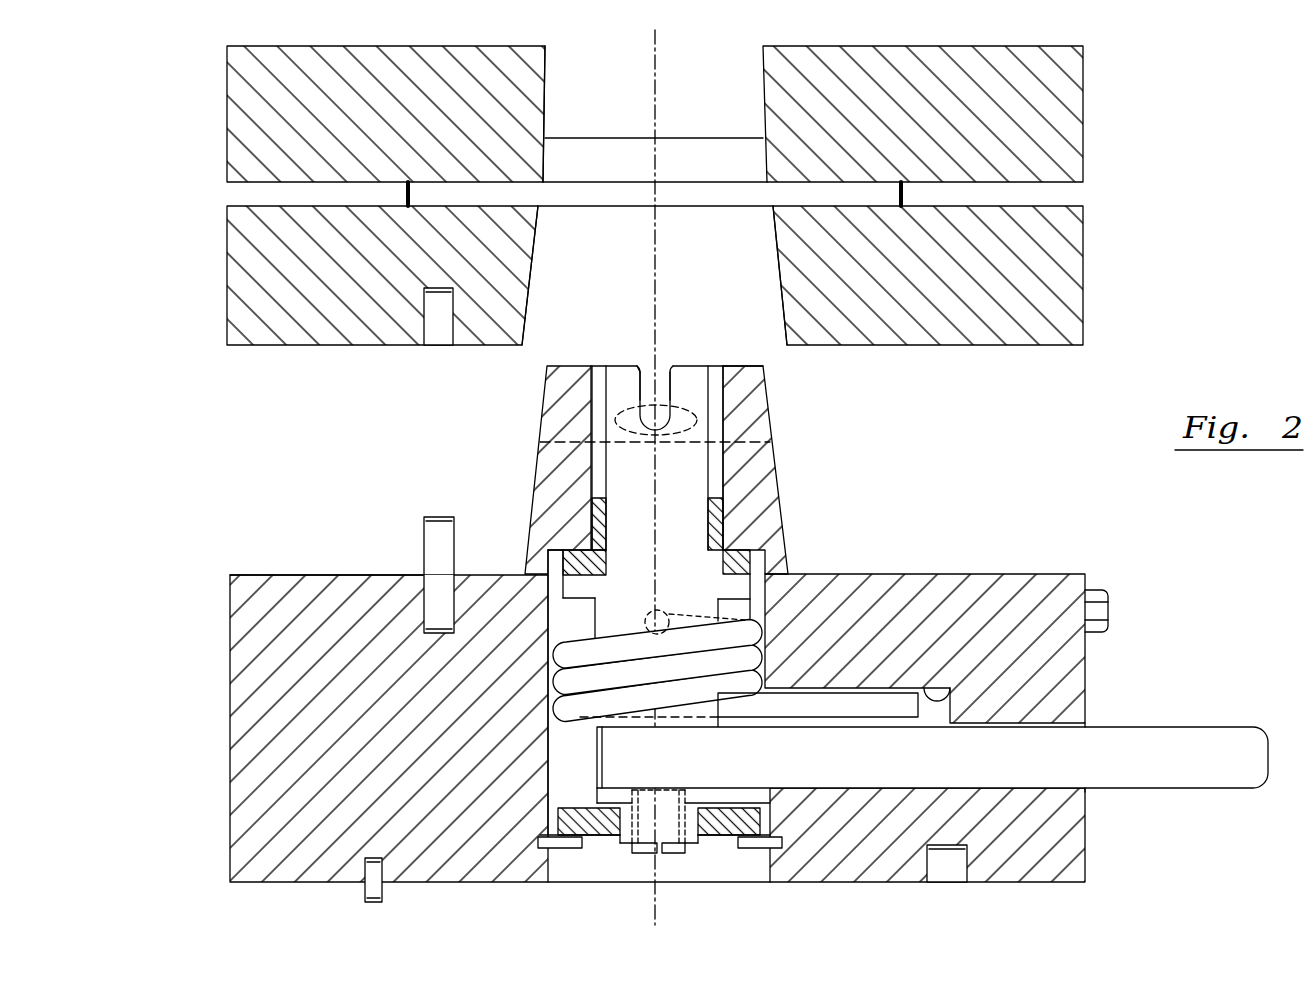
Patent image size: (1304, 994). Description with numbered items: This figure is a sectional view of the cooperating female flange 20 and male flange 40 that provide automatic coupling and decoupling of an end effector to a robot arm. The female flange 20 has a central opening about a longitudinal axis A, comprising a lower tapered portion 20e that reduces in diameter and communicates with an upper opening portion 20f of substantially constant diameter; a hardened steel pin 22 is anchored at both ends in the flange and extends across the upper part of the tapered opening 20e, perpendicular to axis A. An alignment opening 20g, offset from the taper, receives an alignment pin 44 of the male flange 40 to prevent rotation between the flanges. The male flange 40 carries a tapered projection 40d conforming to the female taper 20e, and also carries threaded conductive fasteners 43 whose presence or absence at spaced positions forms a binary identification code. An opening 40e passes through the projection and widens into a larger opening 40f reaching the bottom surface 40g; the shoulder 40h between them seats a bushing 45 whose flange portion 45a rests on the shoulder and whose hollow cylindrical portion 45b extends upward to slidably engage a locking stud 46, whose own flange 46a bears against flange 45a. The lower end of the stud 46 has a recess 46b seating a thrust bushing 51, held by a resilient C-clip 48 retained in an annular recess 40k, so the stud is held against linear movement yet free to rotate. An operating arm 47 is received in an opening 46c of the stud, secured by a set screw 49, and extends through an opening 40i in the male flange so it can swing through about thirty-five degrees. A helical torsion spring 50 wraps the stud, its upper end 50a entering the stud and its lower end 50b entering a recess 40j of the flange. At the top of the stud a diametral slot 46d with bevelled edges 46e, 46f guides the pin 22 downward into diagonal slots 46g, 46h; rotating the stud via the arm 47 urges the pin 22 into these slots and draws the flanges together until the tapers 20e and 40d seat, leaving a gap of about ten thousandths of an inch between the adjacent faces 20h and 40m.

The longitudinal axis A is at (654, 35).
The female flange 20 is at (227, 142).
The lower tapered portion 20e is at (545, 362).
The upper opening portion 20f is at (545, 70).
The alignment opening 20g is at (421, 308).
The adjacent face of female flange 20h is at (1005, 347).
The pin 22 is at (672, 181).
The male flange 40 is at (230, 703).
The tapered projection 40d is at (776, 457).
The opening 40e is at (720, 404).
The larger diameter opening 40f is at (552, 614).
The bottom surface 40g is at (486, 883).
The shoulder 40h is at (552, 568).
The opening 40i is at (1066, 740).
The recess 40j is at (953, 690).
The annular recess 40k is at (538, 841).
The adjacent surface of male flange 40m is at (288, 575).
The threaded fasteners 43 is at (1108, 608).
The alignment pin 44 is at (424, 542).
The bushing 45 is at (574, 528).
The flange portion 45a is at (745, 562).
The hollow cylindrical portion 45b is at (578, 527).
The locking stud 46 is at (613, 528).
The flange 46a is at (584, 590).
The recess 46b is at (597, 805).
The opening 46c is at (590, 718).
The slot 46d is at (655, 428).
The bevelled edge 46e is at (623, 406).
The bevelled edge 46f is at (667, 400).
The diagonally aligned slot 46g is at (622, 406).
The diagonally aligned slot 46h is at (682, 436).
The operating arm 47 is at (1175, 727).
The C-clip 48 is at (747, 847).
The set screw 49 is at (663, 853).
The torsion spring 50 is at (560, 686).
The upper end of torsion spring 50a is at (648, 613).
The lower end of torsion spring 50b is at (832, 702).
The thrust bushing 51 is at (600, 838).